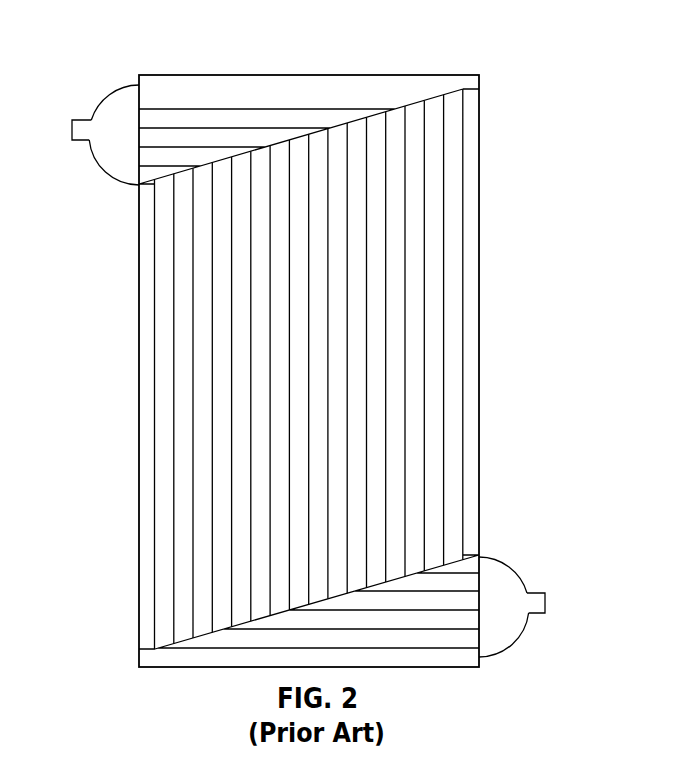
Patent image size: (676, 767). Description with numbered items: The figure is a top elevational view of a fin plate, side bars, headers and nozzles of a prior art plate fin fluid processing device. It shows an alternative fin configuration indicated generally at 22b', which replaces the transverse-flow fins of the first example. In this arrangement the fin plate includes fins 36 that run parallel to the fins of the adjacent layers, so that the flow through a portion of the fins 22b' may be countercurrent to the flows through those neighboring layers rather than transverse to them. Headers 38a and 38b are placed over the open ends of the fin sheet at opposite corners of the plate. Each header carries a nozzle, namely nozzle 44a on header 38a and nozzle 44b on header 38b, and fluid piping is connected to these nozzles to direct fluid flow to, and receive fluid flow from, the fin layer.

The fins 22b' is at (290, 337).
The fins 36 is at (425, 337).
The header 38a is at (113, 88).
The nozzle 44a is at (80, 142).
The header 38b is at (507, 562).
The nozzle 44b is at (540, 615).